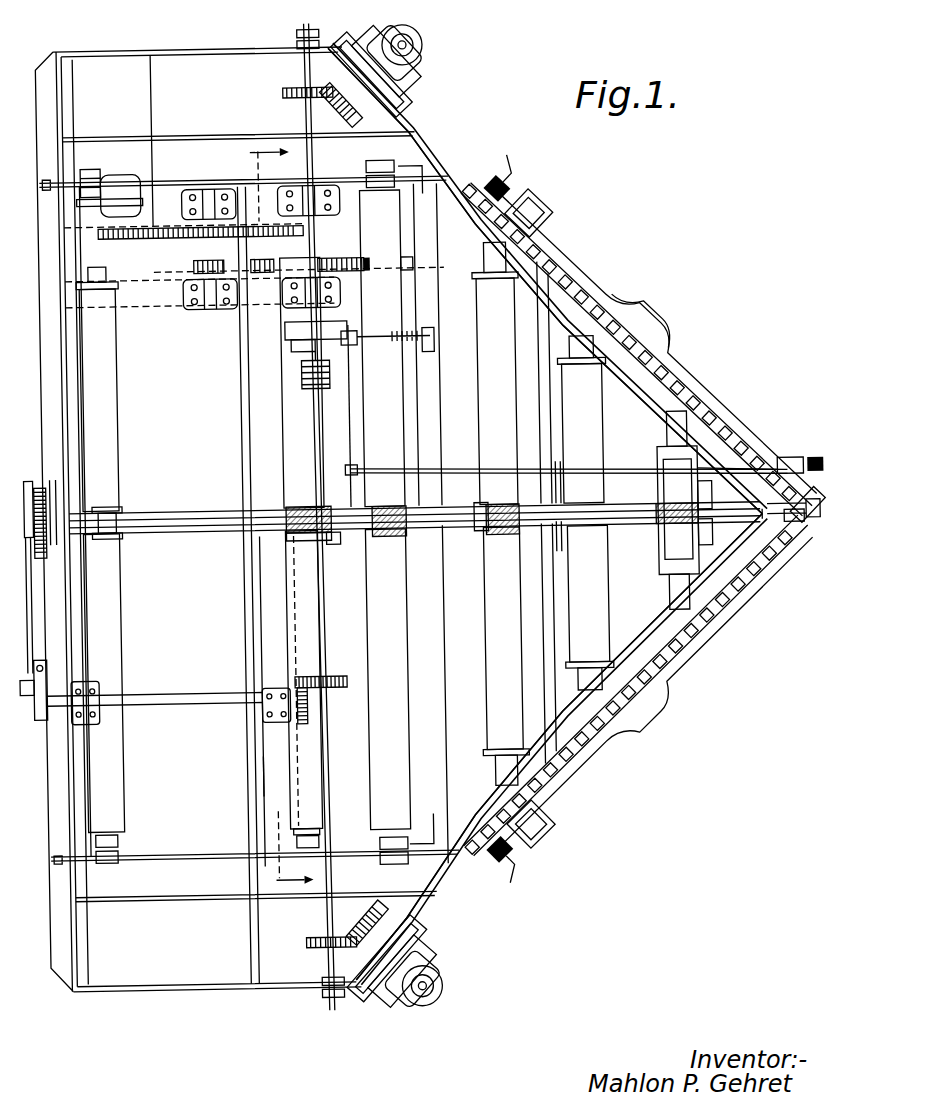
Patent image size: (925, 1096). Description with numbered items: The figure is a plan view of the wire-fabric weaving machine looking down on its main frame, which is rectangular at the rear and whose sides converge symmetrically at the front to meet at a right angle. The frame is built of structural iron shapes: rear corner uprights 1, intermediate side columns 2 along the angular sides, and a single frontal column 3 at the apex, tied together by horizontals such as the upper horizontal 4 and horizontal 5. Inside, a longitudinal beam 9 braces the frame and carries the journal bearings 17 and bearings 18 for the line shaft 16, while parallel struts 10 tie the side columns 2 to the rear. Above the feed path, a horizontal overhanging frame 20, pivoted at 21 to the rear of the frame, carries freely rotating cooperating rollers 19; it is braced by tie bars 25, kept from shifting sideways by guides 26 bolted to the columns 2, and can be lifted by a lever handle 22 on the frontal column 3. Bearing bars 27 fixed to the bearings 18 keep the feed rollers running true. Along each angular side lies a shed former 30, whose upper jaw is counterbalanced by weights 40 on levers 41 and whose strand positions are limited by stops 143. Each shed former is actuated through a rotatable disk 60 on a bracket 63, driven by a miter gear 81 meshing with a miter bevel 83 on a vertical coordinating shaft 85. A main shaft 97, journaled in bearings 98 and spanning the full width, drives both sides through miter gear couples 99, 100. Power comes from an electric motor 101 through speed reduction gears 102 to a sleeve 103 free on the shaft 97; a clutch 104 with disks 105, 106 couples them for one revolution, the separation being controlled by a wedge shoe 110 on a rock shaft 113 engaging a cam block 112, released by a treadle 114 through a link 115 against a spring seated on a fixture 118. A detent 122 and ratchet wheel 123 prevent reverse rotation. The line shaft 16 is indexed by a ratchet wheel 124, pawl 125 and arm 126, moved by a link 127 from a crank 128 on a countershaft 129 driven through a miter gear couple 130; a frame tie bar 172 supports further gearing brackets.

The rear corner uprights 1 is at (62, 62).
The intermediate side columns 2 is at (420, 147).
The frontal column 3 is at (800, 530).
The horizontal 4 is at (722, 422).
The horizontal 5 is at (208, 52).
The longitudinal beam 9 is at (210, 514).
The parallel struts 10 is at (232, 140).
The line shaft 16 is at (162, 548).
The journal bearings 17 is at (412, 534).
The bearings 18 is at (283, 512).
The cooperating rollers 19 is at (600, 468).
The overhanging frame 20 is at (478, 238).
The pivot 21 is at (45, 192).
The lever handle 22 is at (775, 536).
The tie bars 25 is at (545, 382).
The guides 26 is at (398, 180).
The bearing bar 27 is at (470, 514).
The shed formers 30 is at (640, 346).
The weights 40 is at (545, 210).
The levers 41 is at (585, 282).
The rotatable disk 60 is at (406, 101).
The bracket 63 is at (360, 44).
The miter gear 81 is at (418, 80).
The miter bevel 83 is at (418, 40).
The vertical coordinating shaft 85 is at (414, 52).
The main shaft 97 is at (304, 121).
The bearings 98 is at (318, 38).
The miter gear couple 99 is at (322, 100).
The miter gear couple 100 is at (340, 938).
The electric motor 101 is at (112, 173).
The speed reduction gears 102 is at (200, 268).
The sleeve 103 is at (318, 265).
The clutch 104 is at (348, 400).
The clutch disk 105 is at (282, 334).
The clutch disk 106 is at (286, 352).
The wedge shoe 110 is at (349, 338).
The cam block 112 is at (298, 370).
The rock shaft 113 is at (330, 470).
The treadle 114 is at (788, 470).
The link 115 is at (500, 477).
The fixture 118 is at (426, 356).
The detent 122 is at (288, 542).
The ratchet wheel 123 is at (328, 548).
The ratchet wheel 124 is at (40, 490).
The pawl 125 is at (50, 478).
The arm 126 is at (22, 480).
The link 127 is at (26, 620).
The crank 128 is at (30, 722).
The countershaft 129 is at (152, 706).
The miter gear couple 130 is at (322, 700).
The stops 143 is at (484, 195).
The frame tie bar 172 is at (262, 790).